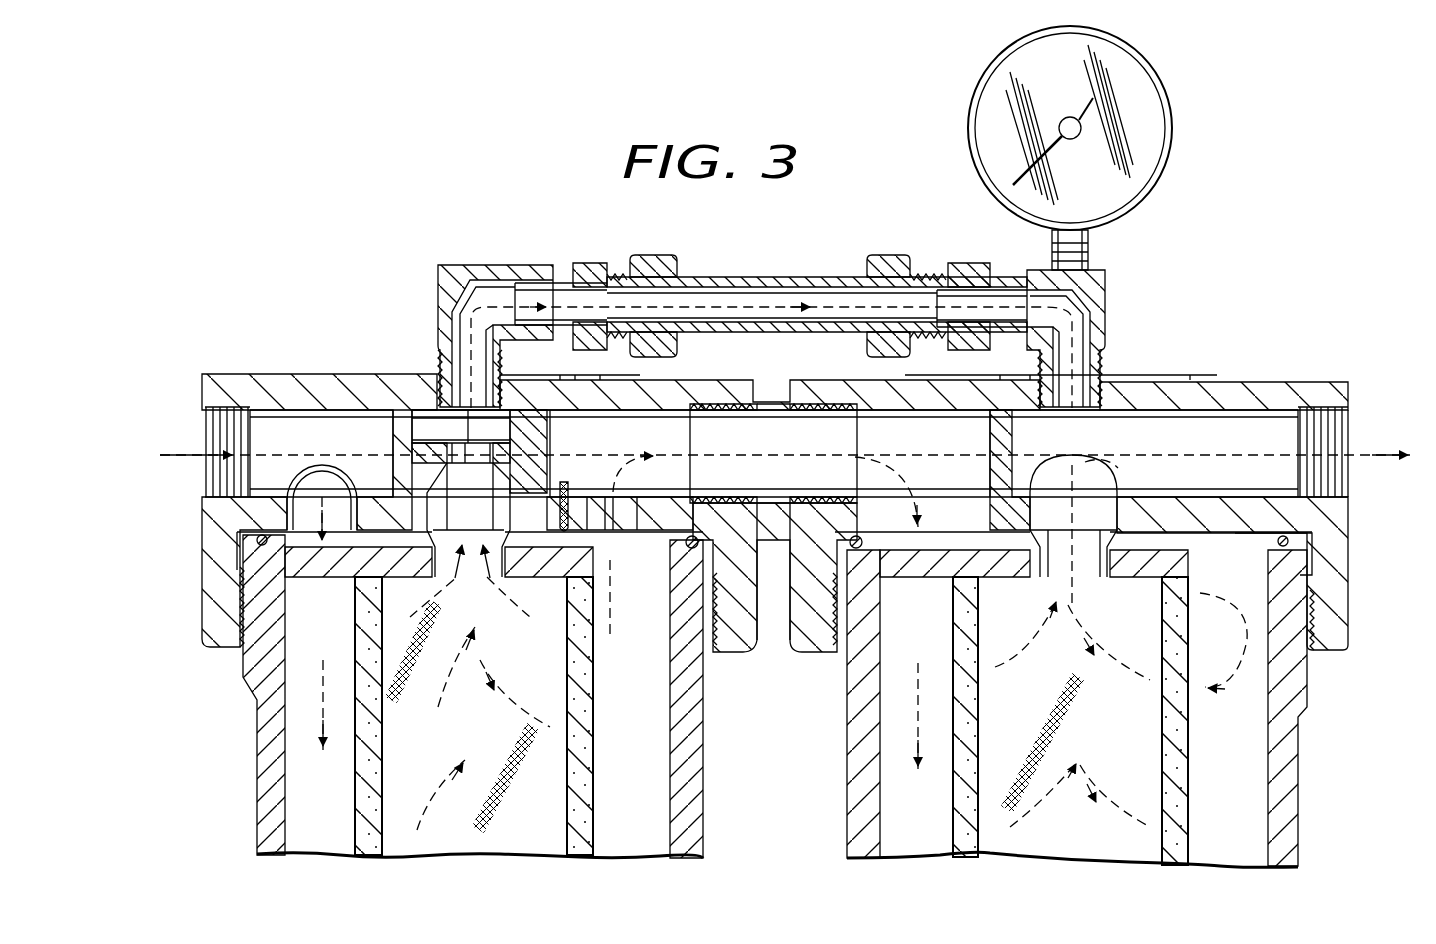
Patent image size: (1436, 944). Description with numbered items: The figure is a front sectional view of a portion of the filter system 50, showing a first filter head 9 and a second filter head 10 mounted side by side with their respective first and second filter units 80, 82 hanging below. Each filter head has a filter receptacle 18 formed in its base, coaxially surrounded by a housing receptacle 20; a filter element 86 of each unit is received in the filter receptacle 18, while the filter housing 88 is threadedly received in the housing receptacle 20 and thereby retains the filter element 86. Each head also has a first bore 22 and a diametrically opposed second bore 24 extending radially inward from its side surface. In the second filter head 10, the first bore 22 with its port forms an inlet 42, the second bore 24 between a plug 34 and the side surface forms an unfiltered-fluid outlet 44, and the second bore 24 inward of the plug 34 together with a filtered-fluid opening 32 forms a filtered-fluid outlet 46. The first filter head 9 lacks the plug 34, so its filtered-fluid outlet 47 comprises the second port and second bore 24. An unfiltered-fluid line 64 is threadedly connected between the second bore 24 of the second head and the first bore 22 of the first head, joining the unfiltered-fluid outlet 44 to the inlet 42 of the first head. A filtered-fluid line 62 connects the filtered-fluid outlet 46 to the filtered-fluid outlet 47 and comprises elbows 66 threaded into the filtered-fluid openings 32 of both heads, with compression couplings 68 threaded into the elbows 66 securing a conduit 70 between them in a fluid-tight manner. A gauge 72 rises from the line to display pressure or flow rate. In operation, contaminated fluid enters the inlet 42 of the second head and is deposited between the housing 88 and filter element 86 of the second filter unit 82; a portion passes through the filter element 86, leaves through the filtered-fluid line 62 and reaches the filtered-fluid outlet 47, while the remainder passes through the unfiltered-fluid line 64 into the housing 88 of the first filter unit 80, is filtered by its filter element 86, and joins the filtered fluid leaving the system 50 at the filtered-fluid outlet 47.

The first filter head 9 is at (1262, 381).
The filter head 10 is at (258, 370).
The filter receptacle 18 is at (1125, 548).
The housing receptacle 20 is at (1240, 540).
The first bore 22 is at (810, 404).
The second bore 24 is at (720, 404).
The filtered-fluid opening 32 is at (497, 392).
The plug 34 is at (556, 445).
The inlet 42 is at (250, 430).
The unfiltered-fluid outlet 44 is at (605, 424).
The filtered-fluid outlet 46 is at (428, 413).
The filtered-fluid outlet 47 is at (1310, 437).
The filter system 50 is at (889, 217).
The filtered-fluid line 62 is at (787, 268).
The unfiltered-fluid line 64 is at (775, 514).
The elbow 66 is at (482, 266).
The compression coupling 68 is at (607, 266).
The conduit 70 is at (710, 278).
The gauge 72 is at (969, 96).
The first filter unit 80 is at (1306, 757).
The second filter unit 82 is at (709, 768).
The filter element 86 is at (363, 720).
The filter housing 88 is at (268, 777).